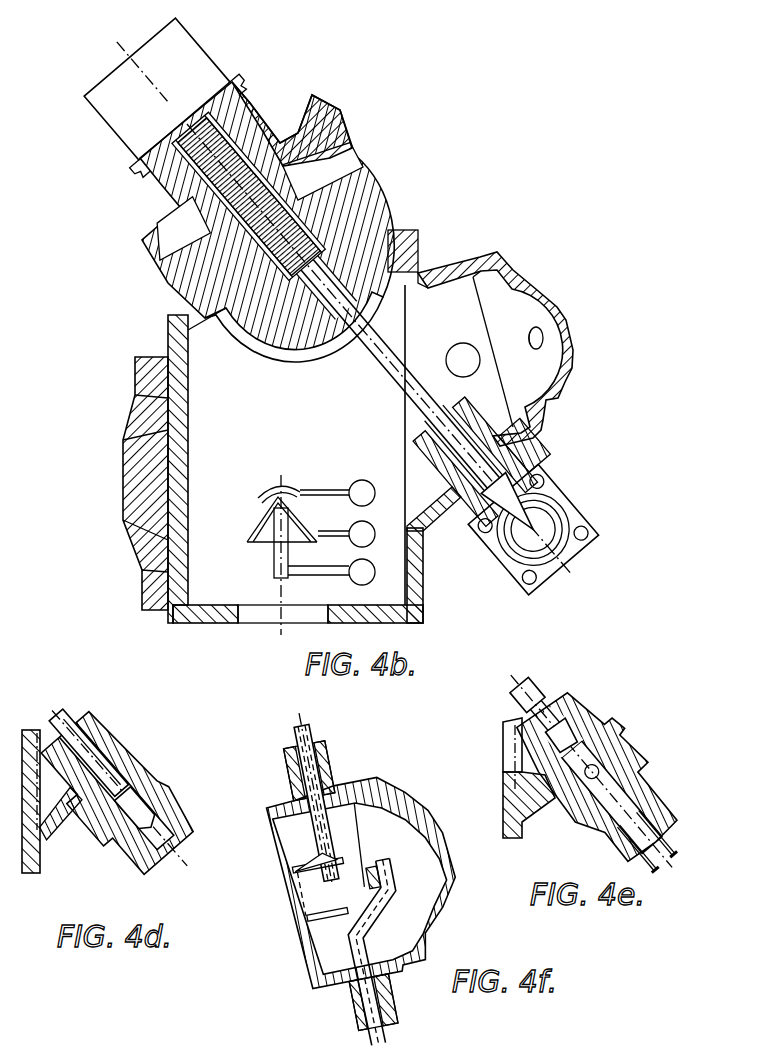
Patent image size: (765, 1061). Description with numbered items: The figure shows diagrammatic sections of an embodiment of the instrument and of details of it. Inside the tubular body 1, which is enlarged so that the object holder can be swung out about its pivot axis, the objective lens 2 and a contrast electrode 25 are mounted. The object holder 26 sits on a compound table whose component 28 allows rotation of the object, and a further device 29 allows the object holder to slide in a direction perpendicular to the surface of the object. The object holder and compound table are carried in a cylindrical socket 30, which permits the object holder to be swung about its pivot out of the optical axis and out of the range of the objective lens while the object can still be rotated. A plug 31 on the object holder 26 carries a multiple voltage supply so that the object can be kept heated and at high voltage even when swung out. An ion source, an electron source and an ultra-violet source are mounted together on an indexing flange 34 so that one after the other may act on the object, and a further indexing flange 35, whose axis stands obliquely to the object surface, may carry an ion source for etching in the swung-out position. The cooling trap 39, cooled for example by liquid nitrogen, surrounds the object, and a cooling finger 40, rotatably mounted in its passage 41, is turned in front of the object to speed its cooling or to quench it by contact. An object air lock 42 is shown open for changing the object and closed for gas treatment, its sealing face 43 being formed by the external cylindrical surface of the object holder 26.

In FIG. 4d, the tubular body 1 is at (36, 855).
In FIG. 4e, the tubular body 1 is at (516, 829).
In FIG. 4b, the objective lens 2 is at (255, 522).
In FIG. 4b, the contrast electrode 25 is at (275, 550).
In FIG. 4b, the object holder 26 is at (365, 338).
In FIG. 4d, the object holder 26 is at (68, 715).
In FIG. 4e, the object holder 26 is at (538, 688).
In FIG. 4b, the compound table component 28 is at (330, 116).
In FIG. 4b, the sliding device 29 is at (237, 91).
In FIG. 4b, the socket 30 is at (353, 188).
In FIG. 4b, the plug 31 is at (202, 73).
In FIG. 4b, the indexing flange 34 is at (145, 486).
In FIG. 4b, the further indexing flange 35 is at (553, 300).
In FIG. 4f, the further indexing flange 35 is at (428, 816).
In FIG. 4f, the cooling trap 39 is at (312, 891).
In FIG. 4f, the cooling finger 40 is at (387, 886).
In FIG. 4f, the passage 41 is at (397, 977).
In FIG. 4b, the object air lock 42 is at (548, 563).
In FIG. 4d, the object air lock 42 is at (140, 768).
In FIG. 4e, the object air lock 42 is at (592, 721).
In FIG. 4d, the sealing face 43 is at (140, 818).
In FIG. 4e, the sealing face 43 is at (560, 732).